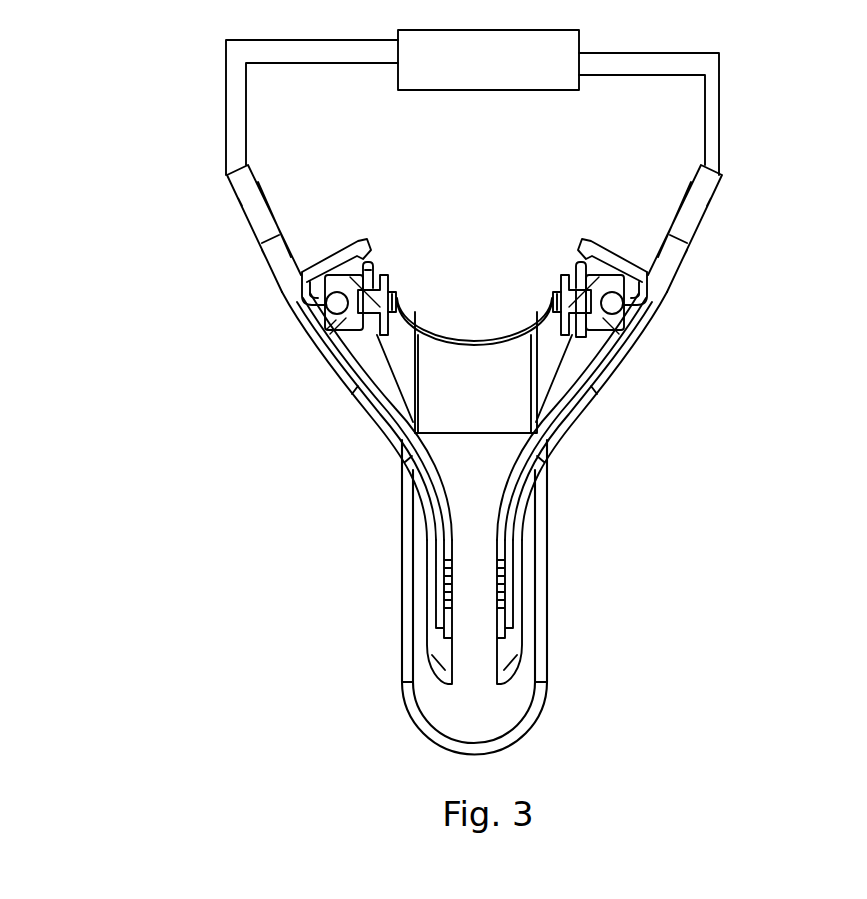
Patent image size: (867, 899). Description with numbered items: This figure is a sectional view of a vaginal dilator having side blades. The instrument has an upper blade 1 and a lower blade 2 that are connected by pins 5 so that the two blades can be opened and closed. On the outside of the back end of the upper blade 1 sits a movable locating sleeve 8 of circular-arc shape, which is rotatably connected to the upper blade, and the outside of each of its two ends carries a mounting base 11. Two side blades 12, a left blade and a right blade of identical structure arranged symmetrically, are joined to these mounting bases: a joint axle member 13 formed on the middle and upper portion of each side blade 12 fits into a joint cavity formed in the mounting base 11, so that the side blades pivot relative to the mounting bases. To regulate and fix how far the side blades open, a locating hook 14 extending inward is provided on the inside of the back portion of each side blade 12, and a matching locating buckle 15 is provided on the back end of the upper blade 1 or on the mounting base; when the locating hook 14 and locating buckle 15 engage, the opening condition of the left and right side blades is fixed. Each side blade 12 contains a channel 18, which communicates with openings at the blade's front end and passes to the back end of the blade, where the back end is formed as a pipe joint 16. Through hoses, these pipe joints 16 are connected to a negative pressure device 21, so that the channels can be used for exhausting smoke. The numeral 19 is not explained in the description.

The upper blade 1 is at (373, 323).
The lower blade 2 is at (427, 683).
The pins 5 is at (398, 298).
The movable locating sleeve 8 is at (389, 278).
The mounting base 11 is at (343, 322).
The side blade 12 is at (280, 311).
The joint axle member 13 is at (336, 303).
The locating hook 14 is at (334, 262).
The locating buckle 15 is at (377, 280).
The pipe joint 16 is at (228, 183).
The channel 18 is at (397, 425).
The inner tube 19 is at (452, 607).
The negative pressure device 21 is at (472, 102).